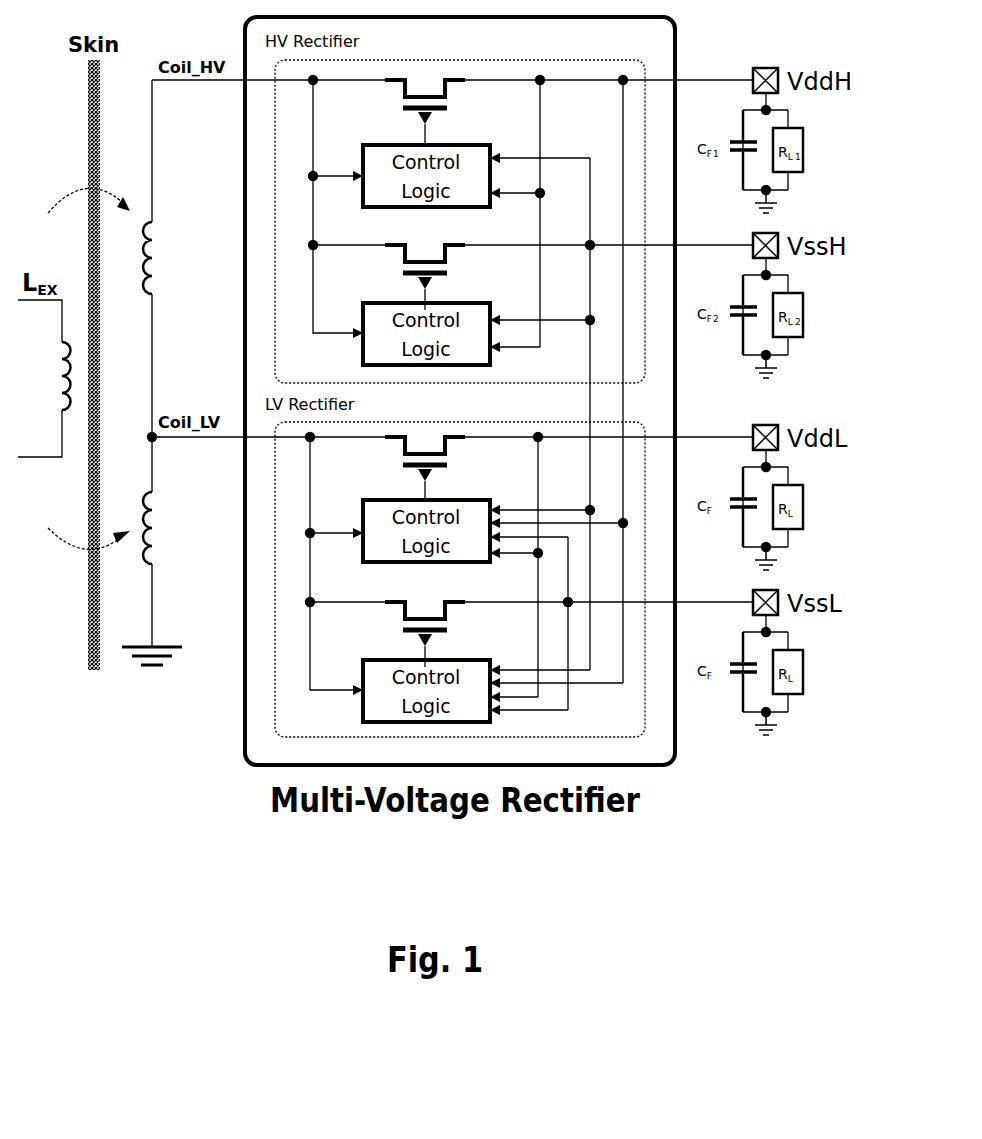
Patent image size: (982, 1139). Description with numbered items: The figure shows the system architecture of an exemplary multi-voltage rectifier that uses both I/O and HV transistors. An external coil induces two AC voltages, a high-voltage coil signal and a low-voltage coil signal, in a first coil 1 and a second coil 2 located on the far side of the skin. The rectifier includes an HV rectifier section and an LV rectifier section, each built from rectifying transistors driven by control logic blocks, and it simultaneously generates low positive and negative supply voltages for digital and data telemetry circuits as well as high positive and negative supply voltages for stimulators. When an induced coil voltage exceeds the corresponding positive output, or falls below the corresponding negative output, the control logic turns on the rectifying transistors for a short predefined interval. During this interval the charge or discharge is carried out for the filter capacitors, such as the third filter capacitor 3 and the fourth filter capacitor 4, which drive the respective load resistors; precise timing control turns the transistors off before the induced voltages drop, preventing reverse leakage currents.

The inductor L1 (high-voltage receiving coil) 1 is at (164, 258).
The inductor L2 (low-voltage receiving coil) 2 is at (163, 528).
The VddL load network (CF3, RL3) 3 is at (739, 497).
The VssL load network (CF4, RL4) 4 is at (739, 662).